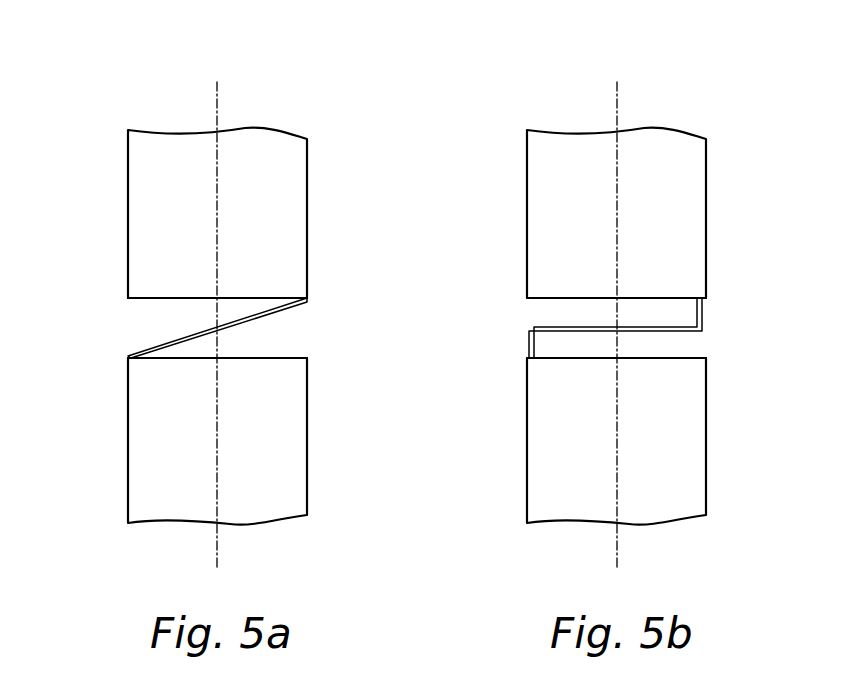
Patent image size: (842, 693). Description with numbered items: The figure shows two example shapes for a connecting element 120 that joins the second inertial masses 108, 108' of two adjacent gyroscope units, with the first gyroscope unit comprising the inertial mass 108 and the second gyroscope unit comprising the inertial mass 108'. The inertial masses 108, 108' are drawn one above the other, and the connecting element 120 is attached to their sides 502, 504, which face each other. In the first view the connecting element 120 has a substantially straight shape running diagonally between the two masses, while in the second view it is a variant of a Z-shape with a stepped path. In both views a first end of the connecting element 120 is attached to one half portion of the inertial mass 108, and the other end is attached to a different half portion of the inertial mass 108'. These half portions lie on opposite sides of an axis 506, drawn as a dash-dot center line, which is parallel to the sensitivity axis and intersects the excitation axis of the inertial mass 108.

In FIG. 5A, the second inertial mass 108 is at (169, 213).
In FIG. 5B, the second inertial mass 108 is at (568, 213).
In FIG. 5A, the second inertial mass 108' is at (173, 448).
In FIG. 5B, the second inertial mass 108' is at (573, 448).
In FIG. 5A, the connecting element 120 is at (172, 353).
In FIG. 5B, the connecting element 120 is at (583, 373).
In FIG. 5A, the side 502 is at (145, 300).
In FIG. 5B, the side 502 is at (580, 324).
In FIG. 5A, the side 504 is at (285, 356).
In FIG. 5B, the side 504 is at (655, 324).
In FIG. 5A, the axis 506 is at (217, 108).
In FIG. 5B, the axis 506 is at (680, 310).